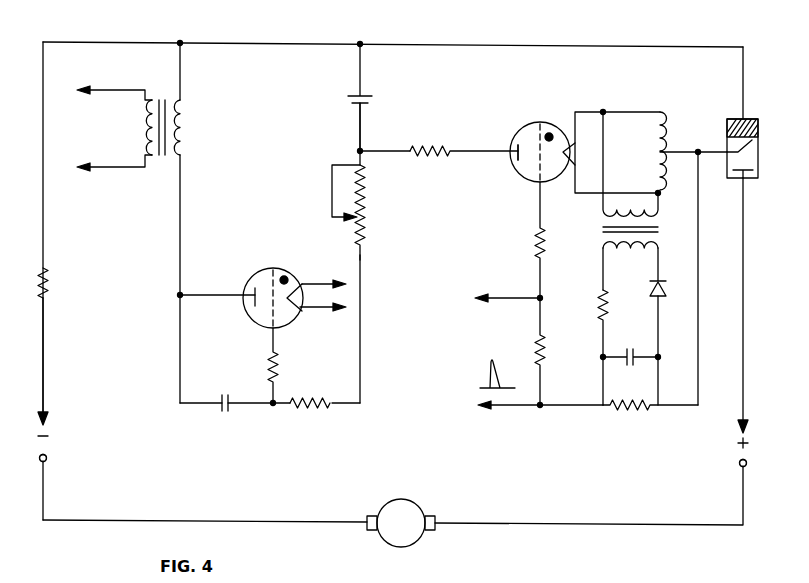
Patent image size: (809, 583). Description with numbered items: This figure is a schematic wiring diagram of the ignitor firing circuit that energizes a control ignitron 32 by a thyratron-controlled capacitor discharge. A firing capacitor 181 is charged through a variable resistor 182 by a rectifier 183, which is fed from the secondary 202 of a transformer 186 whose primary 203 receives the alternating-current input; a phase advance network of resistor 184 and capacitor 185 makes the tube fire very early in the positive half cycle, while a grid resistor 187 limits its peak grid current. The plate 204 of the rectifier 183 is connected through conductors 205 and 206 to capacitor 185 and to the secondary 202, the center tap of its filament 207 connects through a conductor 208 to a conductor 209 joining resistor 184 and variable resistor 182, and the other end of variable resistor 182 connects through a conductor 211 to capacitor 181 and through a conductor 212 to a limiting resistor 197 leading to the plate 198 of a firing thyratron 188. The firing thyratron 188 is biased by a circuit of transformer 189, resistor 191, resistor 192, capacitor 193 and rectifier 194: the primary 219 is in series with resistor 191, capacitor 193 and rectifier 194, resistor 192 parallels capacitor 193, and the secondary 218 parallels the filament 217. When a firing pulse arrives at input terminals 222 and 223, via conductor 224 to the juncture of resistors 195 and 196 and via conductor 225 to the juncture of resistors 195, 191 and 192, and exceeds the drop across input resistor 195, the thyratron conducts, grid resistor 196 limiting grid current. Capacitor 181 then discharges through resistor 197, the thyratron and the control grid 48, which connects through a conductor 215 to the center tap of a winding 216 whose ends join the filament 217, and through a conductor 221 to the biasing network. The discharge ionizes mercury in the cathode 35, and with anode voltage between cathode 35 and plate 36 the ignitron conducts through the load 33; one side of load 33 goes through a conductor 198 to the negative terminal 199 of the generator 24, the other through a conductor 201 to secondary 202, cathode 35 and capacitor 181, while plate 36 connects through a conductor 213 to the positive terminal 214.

The generator 24 is at (406, 547).
The ignitron 32 is at (749, 153).
The load 33 is at (48, 286).
The cathode 35 is at (755, 119).
The plate 36 is at (748, 179).
The control grid 48 is at (733, 148).
The firing capacitor 181 is at (366, 101).
The variable resistor 182 is at (364, 216).
The rectifier 183 is at (264, 279).
The resistor 184 is at (313, 407).
The capacitor 185 is at (226, 418).
The transformer 186 is at (149, 132).
The grid resistor 187 is at (279, 361).
The firing thyratron 188 is at (546, 121).
The transformer 189 is at (603, 249).
The resistor 191 is at (600, 313).
The resistor 192 is at (631, 408).
The capacitor 193 is at (631, 350).
The rectifier 194 is at (660, 283).
The input resistor 195 is at (537, 341).
The grid resistor 196 is at (536, 247).
The limiting resistor 197 is at (432, 147).
The conductor 198 is at (44, 337).
The negative terminal 199 is at (47, 458).
The conductor 201 is at (268, 42).
The secondary 202 is at (180, 130).
The primary 203 is at (150, 152).
The plate 204 is at (250, 288).
The conductor 205 is at (212, 295).
The conductor 206 is at (180, 200).
The filament 207 is at (324, 270).
The conductor 208 is at (350, 310).
The conductor 209 is at (360, 334).
The conductor 211 is at (360, 133).
The conductor 212 is at (373, 151).
The conductor 213 is at (743, 320).
The positive terminal 214 is at (747, 463).
The conductor 215 is at (682, 149).
The winding 216 is at (654, 118).
The filament 217 is at (586, 154).
The secondary 218 is at (659, 199).
The primary 219 is at (658, 257).
The conductor 221 is at (698, 349).
The input terminal 222 is at (477, 296).
The input terminal 223 is at (481, 409).
The conductor 224 is at (509, 297).
The conductor 225 is at (514, 408).